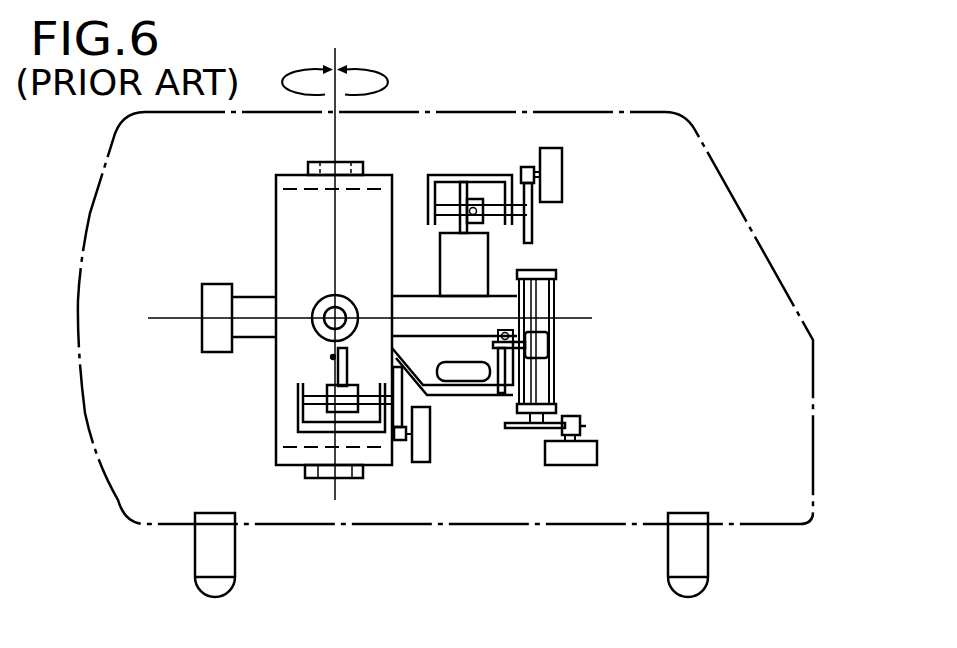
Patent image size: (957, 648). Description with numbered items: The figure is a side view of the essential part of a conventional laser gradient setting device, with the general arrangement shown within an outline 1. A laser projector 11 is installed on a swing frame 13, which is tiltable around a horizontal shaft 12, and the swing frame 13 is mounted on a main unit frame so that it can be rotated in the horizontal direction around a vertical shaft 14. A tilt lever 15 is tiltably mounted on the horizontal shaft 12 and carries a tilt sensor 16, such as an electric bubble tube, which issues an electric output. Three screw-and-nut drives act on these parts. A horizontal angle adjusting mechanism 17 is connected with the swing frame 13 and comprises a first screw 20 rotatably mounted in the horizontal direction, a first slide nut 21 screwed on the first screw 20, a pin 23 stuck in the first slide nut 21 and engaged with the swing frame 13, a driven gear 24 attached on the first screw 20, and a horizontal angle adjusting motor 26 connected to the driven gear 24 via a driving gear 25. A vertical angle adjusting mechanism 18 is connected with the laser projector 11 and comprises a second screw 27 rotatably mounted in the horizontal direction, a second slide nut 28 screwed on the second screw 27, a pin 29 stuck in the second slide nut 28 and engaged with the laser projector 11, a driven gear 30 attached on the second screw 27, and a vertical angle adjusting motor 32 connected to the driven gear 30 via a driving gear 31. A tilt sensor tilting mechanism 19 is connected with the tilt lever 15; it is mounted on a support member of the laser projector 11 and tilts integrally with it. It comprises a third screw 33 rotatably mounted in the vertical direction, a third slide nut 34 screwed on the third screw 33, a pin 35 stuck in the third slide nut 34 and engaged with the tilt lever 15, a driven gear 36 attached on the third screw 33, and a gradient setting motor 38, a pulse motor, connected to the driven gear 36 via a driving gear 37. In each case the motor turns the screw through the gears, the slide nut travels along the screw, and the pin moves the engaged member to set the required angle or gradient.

The housing 1 is at (797, 307).
The laser projector 11 is at (248, 297).
The horizontal shaft 12 is at (313, 323).
The swing frame 13 is at (276, 218).
The vertical shaft 14 is at (343, 163).
The tilt lever 15 is at (466, 390).
The tilt sensor 16 is at (480, 365).
The horizontal angle adjusting mechanism 17 is at (293, 428).
The vertical angle adjusting mechanism 18 is at (512, 140).
The tilt sensor tilting mechanism 19 is at (578, 366).
The first screw 20 is at (282, 410).
The first slide nut 21 is at (347, 412).
The pin 23 is at (337, 367).
The driven gear 24 is at (432, 408).
The driving gear 25 is at (389, 415).
The horizontal angle adjusting motor 26 is at (422, 462).
The second screw 27 is at (445, 186).
The second slide nut 28 is at (477, 199).
The pin 29 is at (483, 222).
The driven gear 30 is at (527, 232).
The driving gear 31 is at (530, 167).
The vertical angle adjusting motor 32 is at (556, 170).
The third screw 33 is at (553, 303).
The third slide nut 34 is at (548, 345).
The pin 35 is at (507, 412).
The driven gear 36 is at (560, 418).
The driving gear 37 is at (582, 430).
The gradient setting motor 38 is at (577, 466).